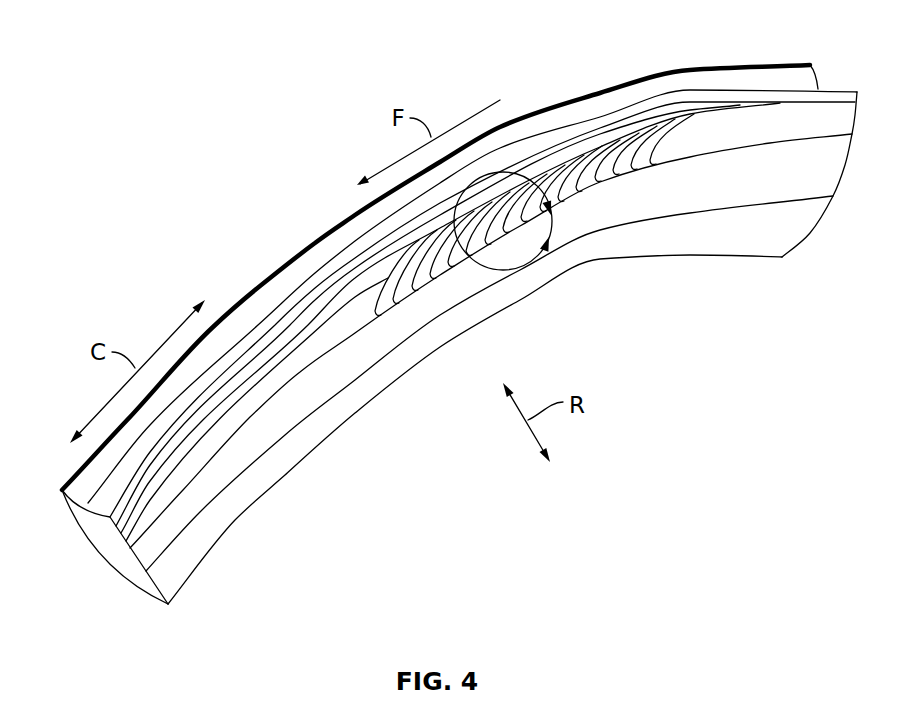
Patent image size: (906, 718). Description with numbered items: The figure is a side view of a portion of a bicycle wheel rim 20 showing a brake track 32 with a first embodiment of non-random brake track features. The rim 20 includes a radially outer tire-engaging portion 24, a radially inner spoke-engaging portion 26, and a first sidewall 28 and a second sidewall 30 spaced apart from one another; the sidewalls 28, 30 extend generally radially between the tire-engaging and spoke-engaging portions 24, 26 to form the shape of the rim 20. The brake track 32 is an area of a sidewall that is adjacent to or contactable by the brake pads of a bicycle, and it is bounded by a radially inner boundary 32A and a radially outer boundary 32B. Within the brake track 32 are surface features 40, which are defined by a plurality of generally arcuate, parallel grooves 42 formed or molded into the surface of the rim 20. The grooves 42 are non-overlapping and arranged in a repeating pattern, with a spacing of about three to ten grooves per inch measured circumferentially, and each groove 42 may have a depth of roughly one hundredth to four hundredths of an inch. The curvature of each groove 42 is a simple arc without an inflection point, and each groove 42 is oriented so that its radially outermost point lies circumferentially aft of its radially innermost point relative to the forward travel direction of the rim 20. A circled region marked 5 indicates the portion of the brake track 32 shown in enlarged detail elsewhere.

The detail view circle 5 is at (504, 270).
The wheel rim 20 is at (445, 329).
The radially outer tire-engaging portion 24 is at (575, 112).
The radially inner spoke-engaging portion 26 is at (500, 321).
The first sidewall 28 is at (220, 482).
The second sidewall 30 is at (106, 545).
The brake track 32 is at (353, 327).
The radially inner boundary 32A is at (262, 410).
The radially outer boundary 32B is at (322, 315).
The surface features 40 is at (559, 201).
The grooves 42 is at (655, 143).